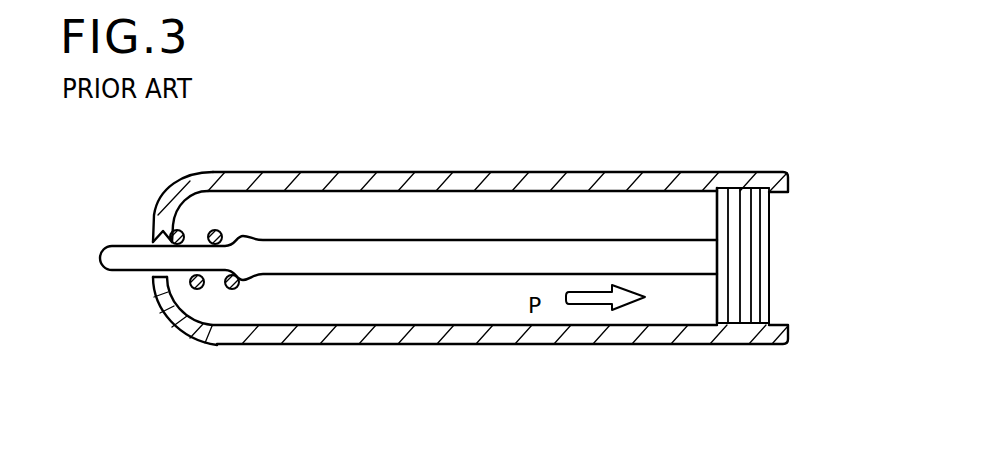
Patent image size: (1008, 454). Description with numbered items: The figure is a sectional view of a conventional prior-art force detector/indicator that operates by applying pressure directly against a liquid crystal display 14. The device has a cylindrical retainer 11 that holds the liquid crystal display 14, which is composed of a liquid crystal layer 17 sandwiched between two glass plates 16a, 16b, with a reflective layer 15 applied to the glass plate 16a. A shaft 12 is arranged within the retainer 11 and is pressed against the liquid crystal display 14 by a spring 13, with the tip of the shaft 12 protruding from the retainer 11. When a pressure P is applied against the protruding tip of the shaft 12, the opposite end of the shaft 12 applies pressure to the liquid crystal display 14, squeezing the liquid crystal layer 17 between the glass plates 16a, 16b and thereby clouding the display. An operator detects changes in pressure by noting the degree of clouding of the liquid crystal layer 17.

The cylindrical retainer 11 is at (505, 173).
The shaft 12 is at (328, 257).
The spring 13 is at (205, 287).
The liquid crystal display 14 is at (779, 230).
The reflective layer 15 is at (722, 188).
The glass plate 16a is at (738, 188).
The glass plate 16b is at (763, 323).
The liquid crystal layer 17 is at (745, 323).